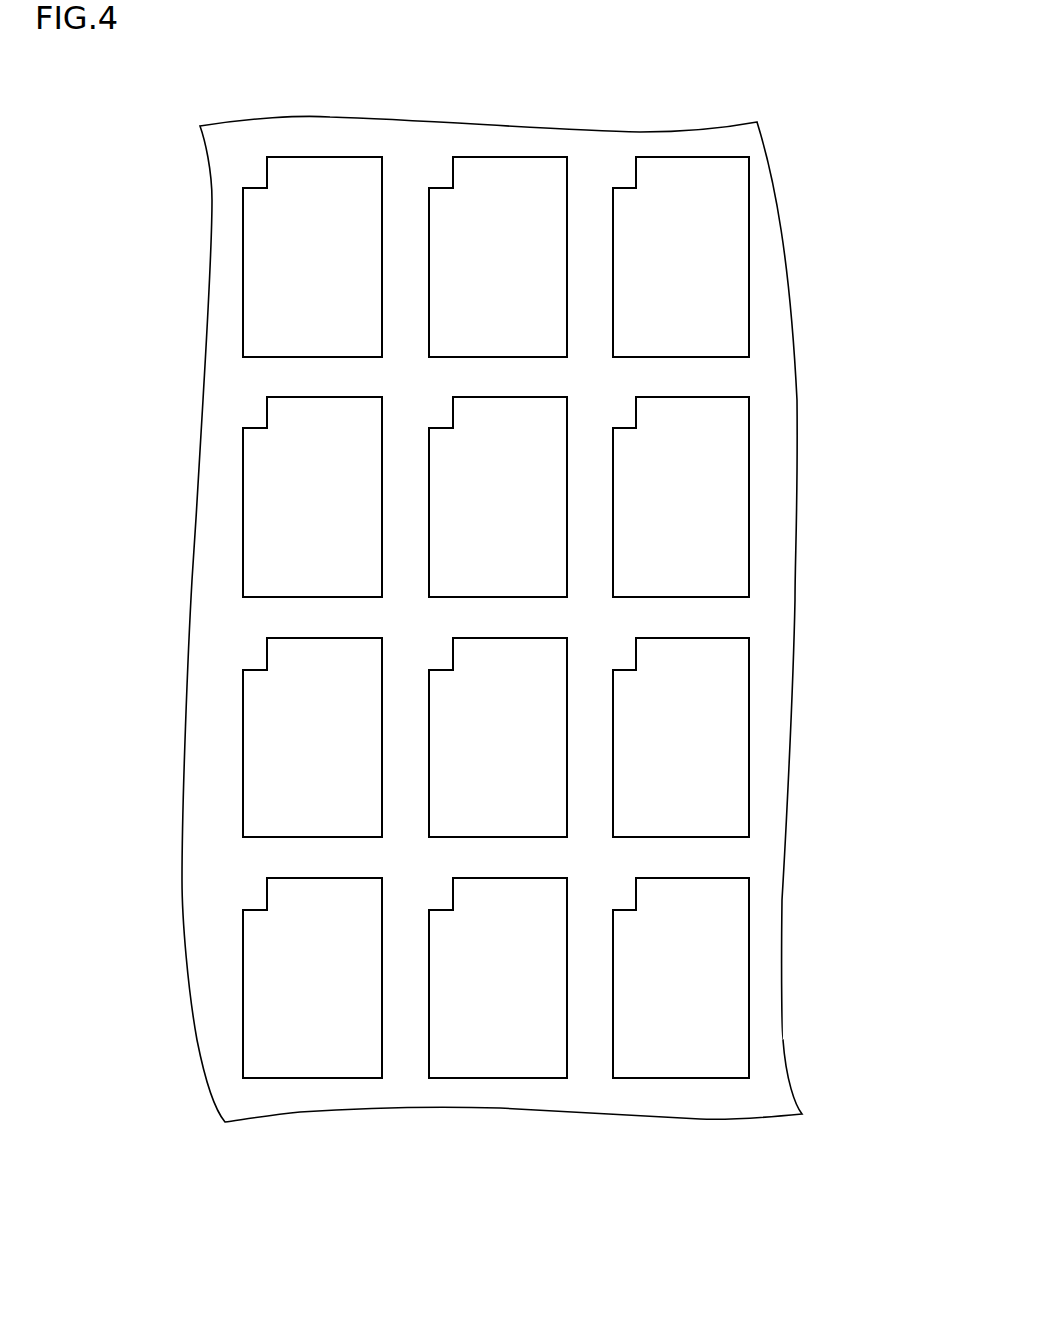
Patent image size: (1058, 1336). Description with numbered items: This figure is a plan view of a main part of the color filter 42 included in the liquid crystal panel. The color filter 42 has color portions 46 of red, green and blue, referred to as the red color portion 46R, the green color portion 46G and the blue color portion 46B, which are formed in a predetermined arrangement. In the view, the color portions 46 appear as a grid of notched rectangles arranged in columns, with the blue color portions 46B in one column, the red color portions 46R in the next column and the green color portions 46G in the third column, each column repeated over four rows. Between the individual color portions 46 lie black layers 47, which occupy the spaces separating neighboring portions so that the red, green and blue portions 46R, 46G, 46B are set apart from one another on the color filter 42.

The color filter 42 is at (825, 213).
The color portions 46 is at (257, 1200).
The blue color portion 46B is at (337, 1057).
The red color portion 46R is at (506, 1057).
The green color portion 46G is at (673, 1056).
The black layers 47 is at (733, 612).